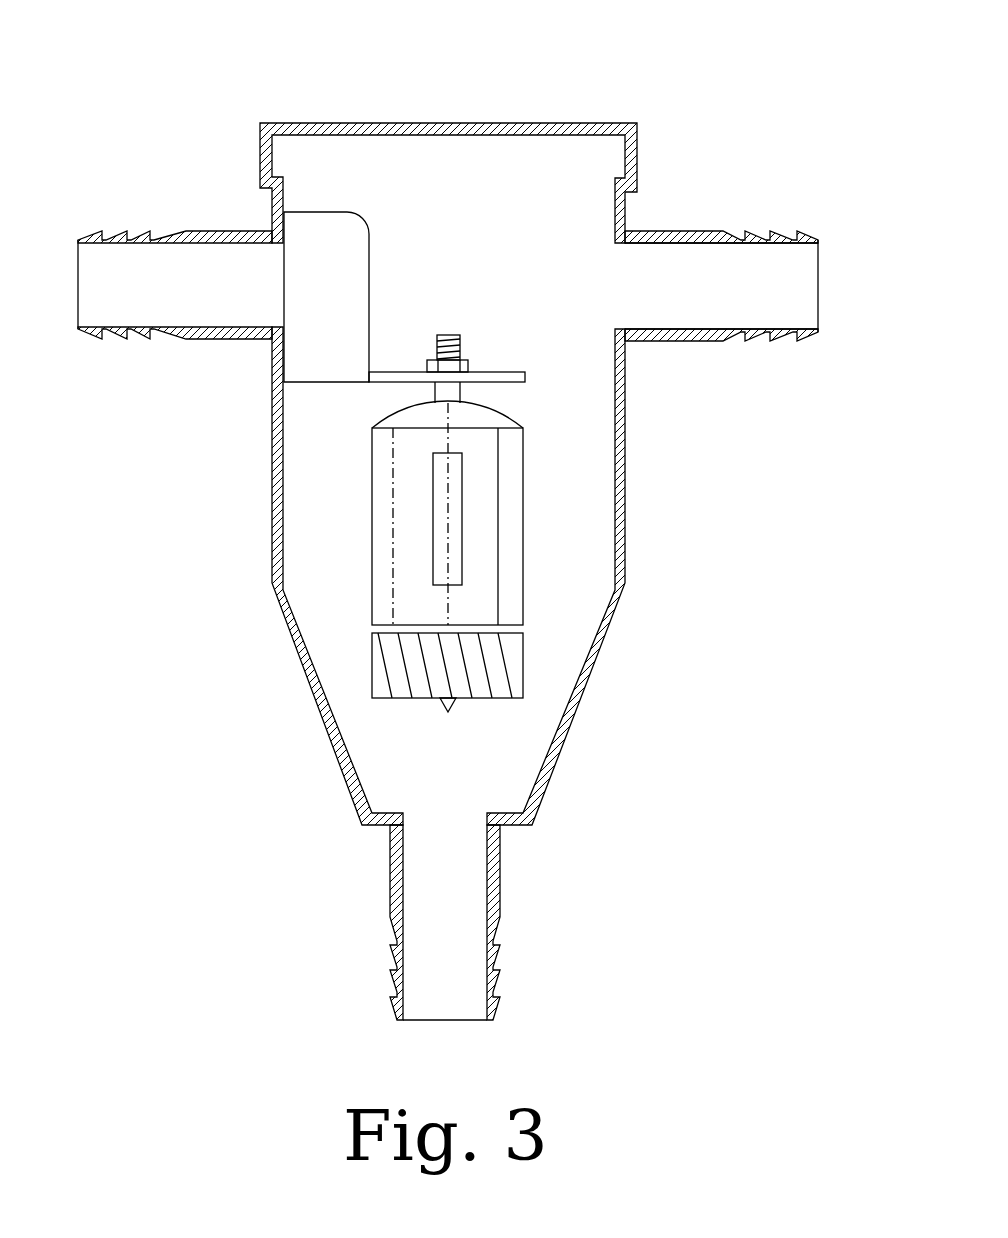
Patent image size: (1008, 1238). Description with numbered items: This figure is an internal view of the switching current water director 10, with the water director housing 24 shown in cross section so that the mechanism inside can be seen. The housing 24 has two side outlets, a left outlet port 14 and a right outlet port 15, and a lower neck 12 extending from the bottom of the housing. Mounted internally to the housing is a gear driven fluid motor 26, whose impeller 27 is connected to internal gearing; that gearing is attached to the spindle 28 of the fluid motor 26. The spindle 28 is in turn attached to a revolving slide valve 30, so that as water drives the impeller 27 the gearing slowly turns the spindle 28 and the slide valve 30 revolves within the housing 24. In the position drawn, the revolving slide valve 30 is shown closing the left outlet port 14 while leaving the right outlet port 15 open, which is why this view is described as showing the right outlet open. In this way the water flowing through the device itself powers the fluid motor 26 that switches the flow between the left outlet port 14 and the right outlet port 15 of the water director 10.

The switching current water director 10 is at (582, 125).
The bottom outlet fitting 12 is at (493, 1015).
The left outlet port 14 is at (267, 270).
The right outlet port 15 is at (640, 287).
The water director housing 24 is at (633, 232).
The gear driven fluid motor 26 is at (490, 493).
The impeller 27 is at (525, 673).
The spindle 28 is at (460, 340).
The revolving slide valve 30 is at (355, 270).